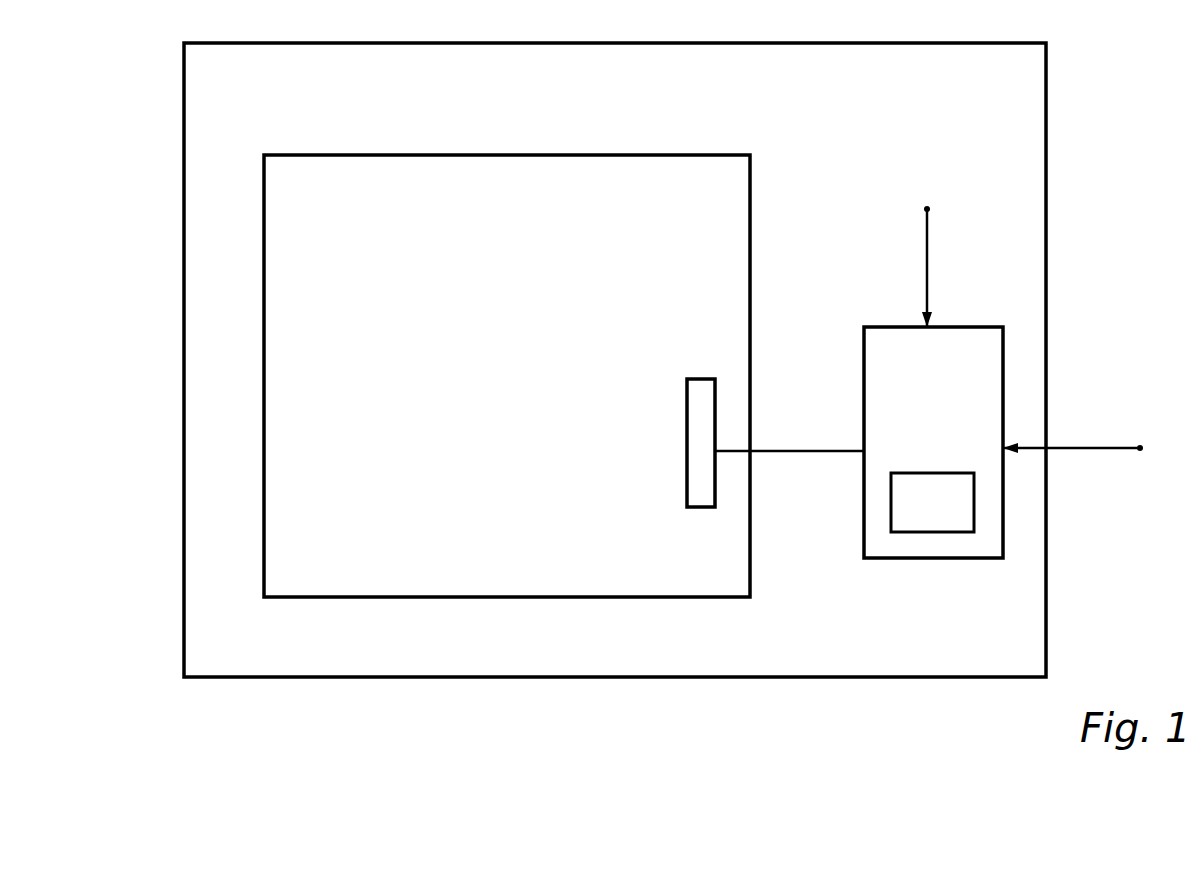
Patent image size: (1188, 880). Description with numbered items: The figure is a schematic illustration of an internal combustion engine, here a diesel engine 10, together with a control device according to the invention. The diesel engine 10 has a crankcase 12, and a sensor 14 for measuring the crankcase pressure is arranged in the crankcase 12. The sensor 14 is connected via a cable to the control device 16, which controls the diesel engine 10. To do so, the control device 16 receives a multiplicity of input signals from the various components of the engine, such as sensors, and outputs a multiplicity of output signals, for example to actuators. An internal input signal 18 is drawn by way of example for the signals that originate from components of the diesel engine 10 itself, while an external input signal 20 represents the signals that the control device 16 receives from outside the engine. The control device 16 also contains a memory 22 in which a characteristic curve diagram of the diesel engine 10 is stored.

The diesel engine 10 is at (263, 678).
The crankcase 12 is at (483, 155).
The sensor 14 is at (687, 467).
The control device 16 is at (1003, 385).
The internal input signal 18 is at (930, 255).
The external input signal 20 is at (1090, 450).
The memory 22 is at (930, 473).